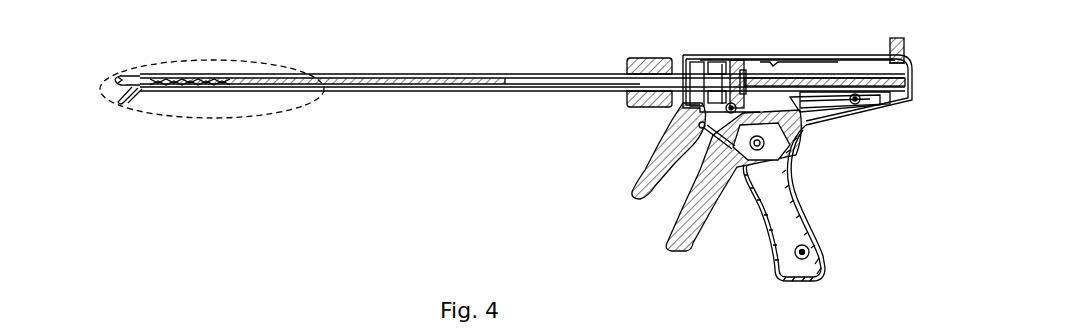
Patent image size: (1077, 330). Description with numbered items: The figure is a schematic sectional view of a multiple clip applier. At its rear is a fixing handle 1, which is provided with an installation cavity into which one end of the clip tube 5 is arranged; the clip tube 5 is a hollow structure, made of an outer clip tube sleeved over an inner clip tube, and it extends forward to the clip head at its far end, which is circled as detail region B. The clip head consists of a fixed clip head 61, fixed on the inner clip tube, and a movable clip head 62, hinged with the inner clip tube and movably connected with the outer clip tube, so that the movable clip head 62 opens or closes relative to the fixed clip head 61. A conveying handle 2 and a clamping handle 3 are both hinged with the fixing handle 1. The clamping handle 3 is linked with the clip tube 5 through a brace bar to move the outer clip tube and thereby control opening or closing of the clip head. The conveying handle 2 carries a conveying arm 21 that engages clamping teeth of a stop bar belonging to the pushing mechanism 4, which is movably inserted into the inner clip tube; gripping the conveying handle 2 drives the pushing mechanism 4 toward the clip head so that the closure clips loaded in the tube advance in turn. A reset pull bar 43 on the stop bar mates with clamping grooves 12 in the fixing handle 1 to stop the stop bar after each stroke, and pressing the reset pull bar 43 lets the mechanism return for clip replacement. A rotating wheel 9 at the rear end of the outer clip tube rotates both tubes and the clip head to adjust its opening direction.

The fixing handle 1 is at (783, 207).
The conveying handle 2 is at (698, 212).
The clamping handle 3 is at (638, 190).
The pushing mechanism 4 is at (784, 79).
The clip tube 5 is at (410, 74).
The rotating wheel 9 is at (646, 62).
The clamping grooves 12 is at (832, 57).
The conveying arm 21 is at (806, 110).
The reset pull bar 43 is at (904, 46).
The fixed clip head 61 is at (121, 78).
The movable clip head 62 is at (132, 96).
The detail region B is at (225, 64).